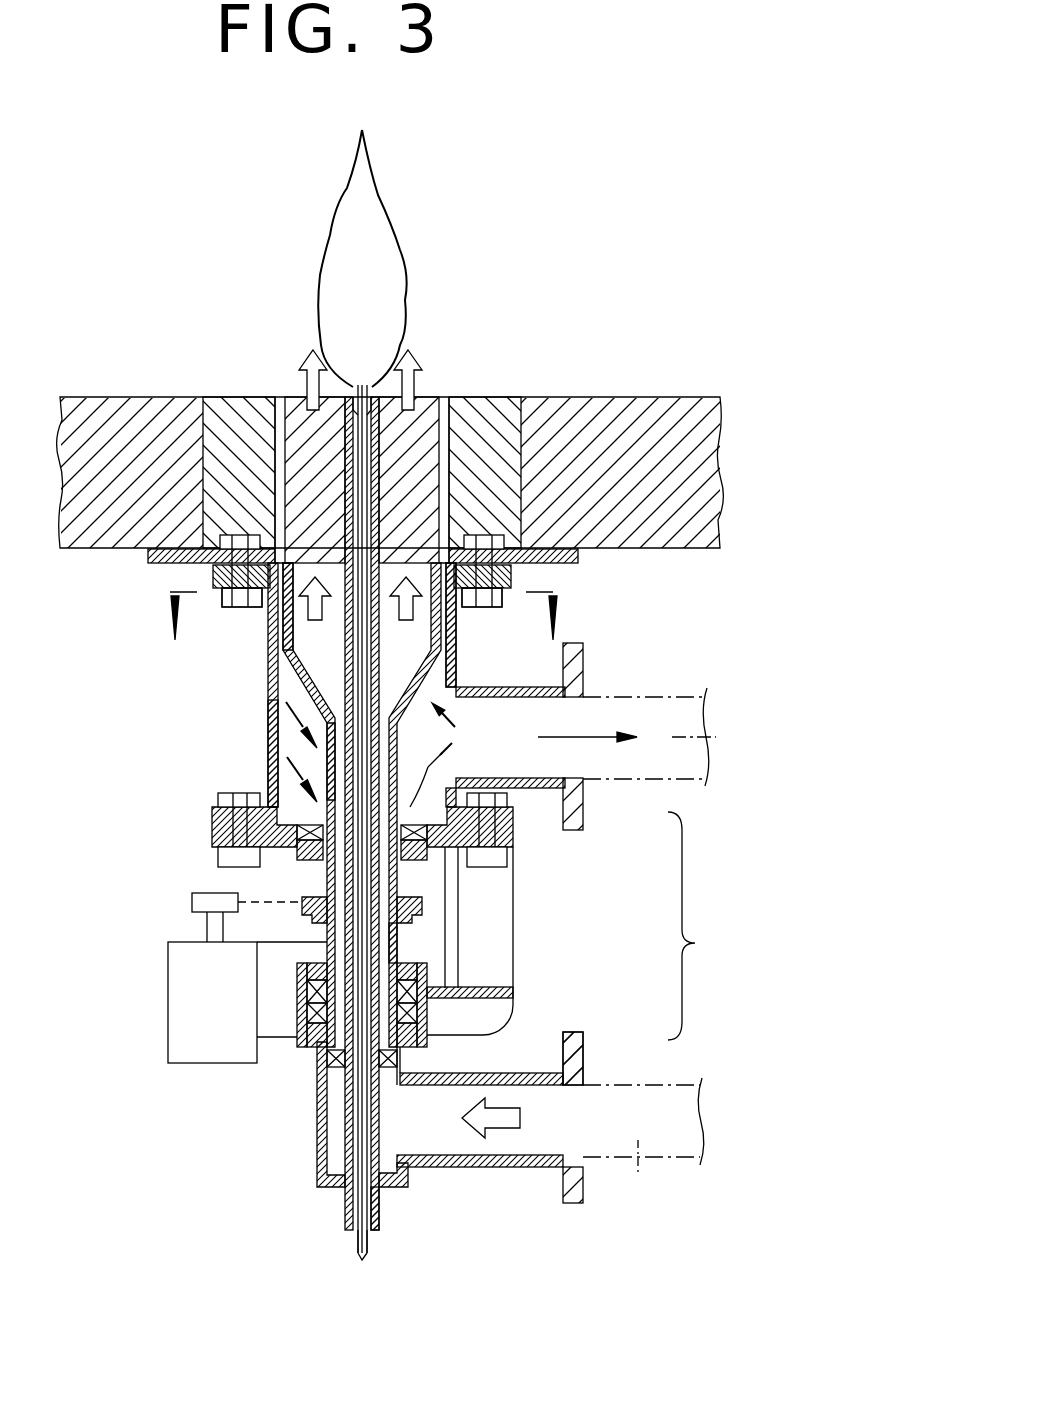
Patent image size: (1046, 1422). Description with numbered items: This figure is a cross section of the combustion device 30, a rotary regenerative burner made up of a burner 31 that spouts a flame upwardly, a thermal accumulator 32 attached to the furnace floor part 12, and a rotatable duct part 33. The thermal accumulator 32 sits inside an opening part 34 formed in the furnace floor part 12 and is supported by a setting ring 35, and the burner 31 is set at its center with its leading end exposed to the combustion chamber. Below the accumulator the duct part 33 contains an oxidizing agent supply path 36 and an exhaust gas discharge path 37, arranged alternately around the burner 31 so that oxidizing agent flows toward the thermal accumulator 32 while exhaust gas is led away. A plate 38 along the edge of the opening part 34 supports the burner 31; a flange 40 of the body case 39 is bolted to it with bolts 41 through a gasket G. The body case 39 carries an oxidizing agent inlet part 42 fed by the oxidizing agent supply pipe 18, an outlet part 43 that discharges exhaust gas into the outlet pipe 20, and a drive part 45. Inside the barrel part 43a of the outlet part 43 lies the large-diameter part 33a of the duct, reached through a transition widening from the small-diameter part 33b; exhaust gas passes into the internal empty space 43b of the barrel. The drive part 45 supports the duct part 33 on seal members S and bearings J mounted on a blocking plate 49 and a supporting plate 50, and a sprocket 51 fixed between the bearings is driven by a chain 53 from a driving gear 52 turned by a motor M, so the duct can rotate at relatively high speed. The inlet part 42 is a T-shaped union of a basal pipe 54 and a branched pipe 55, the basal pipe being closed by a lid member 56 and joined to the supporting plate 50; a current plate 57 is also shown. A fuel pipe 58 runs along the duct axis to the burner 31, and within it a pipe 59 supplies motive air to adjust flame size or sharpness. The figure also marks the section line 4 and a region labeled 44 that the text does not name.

The furnace floor part 12 is at (654, 556).
The oxidizing agent supply pipe 18 is at (643, 1145).
The outlet pipe 20 is at (656, 737).
The combustion device 30 is at (108, 305).
The burner 31 is at (367, 385).
The thermal accumulator 32 is at (302, 465).
The duct part 33 is at (293, 716).
The large-diameter part 33a is at (300, 648).
The small-diameter part 33b is at (327, 757).
The opening part 34 is at (218, 406).
The setting ring 35 is at (479, 438).
The oxidizing agent supply path 36 is at (342, 762).
The exhaust gas discharge path 37 is at (278, 722).
The plate 38 is at (150, 557).
The body case 39 is at (704, 926).
The flange 40 is at (243, 602).
The bolts 41 is at (232, 594).
The oxidizing agent inlet part 42 is at (596, 1081).
The outlet part 43 is at (588, 801).
The barrel part 43a is at (458, 670).
The internal empty space 43b is at (270, 779).
The shaft portion 44 is at (398, 940).
The drive part 45 is at (420, 912).
The blocking plate 49 is at (508, 841).
The supporting plate 50 is at (424, 1040).
The sprocket 51 is at (302, 915).
The driving gear 52 is at (192, 902).
The chain 53 is at (298, 860).
The basal pipe 54 is at (317, 1126).
The branched pipe 55 is at (506, 1172).
The lid member 56 is at (406, 1184).
The current plate 57 is at (322, 1062).
The fuel pipe 58 is at (380, 1213).
The pipe 59 is at (362, 1260).
The seal members S is at (380, 111).
The bearings J is at (318, 860).
The gasket G is at (212, 575).
The motor M is at (228, 1018).
The section line 4- 4 is at (360, 620).